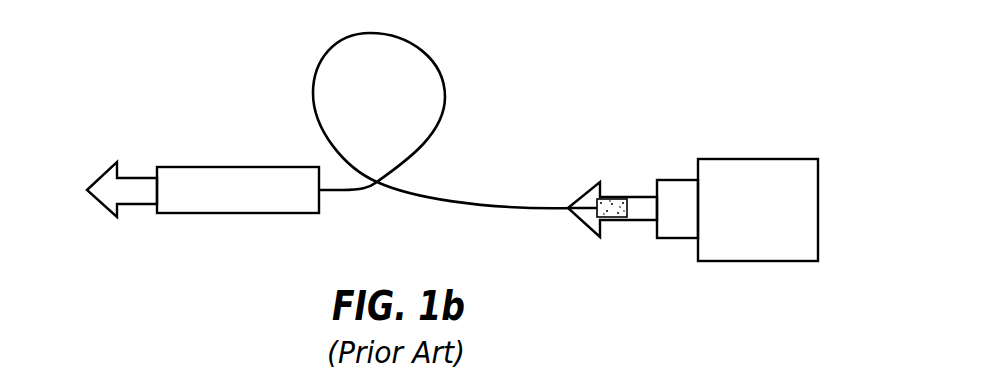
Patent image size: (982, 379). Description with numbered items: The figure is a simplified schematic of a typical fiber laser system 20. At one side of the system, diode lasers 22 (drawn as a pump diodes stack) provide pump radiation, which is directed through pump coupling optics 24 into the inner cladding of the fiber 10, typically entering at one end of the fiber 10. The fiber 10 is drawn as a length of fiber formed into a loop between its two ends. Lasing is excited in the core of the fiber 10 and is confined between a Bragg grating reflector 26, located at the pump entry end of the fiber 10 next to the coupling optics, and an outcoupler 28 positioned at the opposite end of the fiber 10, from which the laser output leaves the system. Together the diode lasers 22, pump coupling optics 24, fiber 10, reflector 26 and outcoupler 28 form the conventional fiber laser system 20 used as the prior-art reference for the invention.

The fiber 10 is at (418, 51).
The fiber laser system 20 is at (756, 90).
The diode lasers 22 is at (759, 158).
The pump coupling optics 24 is at (678, 180).
The Bragg grating reflector 26 is at (615, 204).
The outcoupler 28 is at (237, 167).